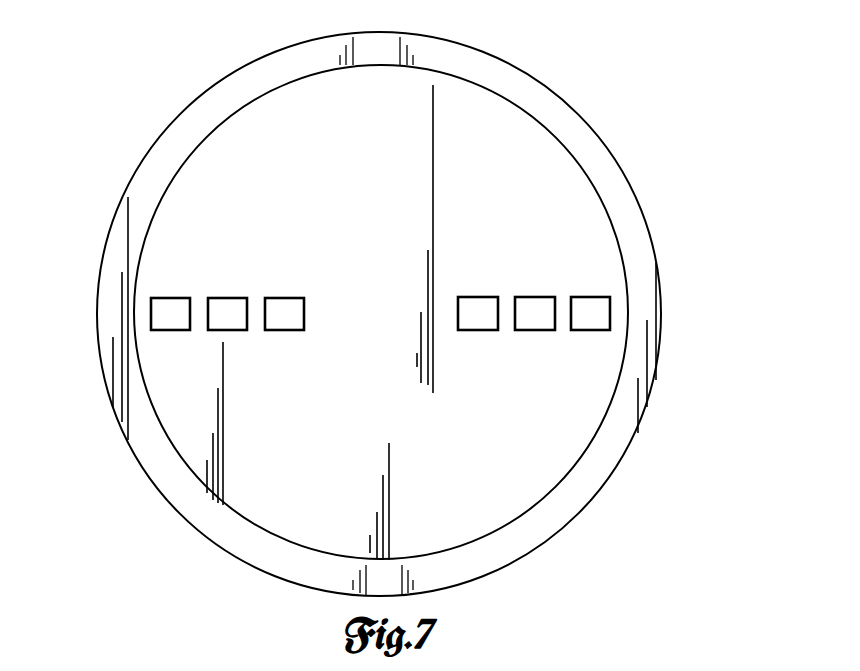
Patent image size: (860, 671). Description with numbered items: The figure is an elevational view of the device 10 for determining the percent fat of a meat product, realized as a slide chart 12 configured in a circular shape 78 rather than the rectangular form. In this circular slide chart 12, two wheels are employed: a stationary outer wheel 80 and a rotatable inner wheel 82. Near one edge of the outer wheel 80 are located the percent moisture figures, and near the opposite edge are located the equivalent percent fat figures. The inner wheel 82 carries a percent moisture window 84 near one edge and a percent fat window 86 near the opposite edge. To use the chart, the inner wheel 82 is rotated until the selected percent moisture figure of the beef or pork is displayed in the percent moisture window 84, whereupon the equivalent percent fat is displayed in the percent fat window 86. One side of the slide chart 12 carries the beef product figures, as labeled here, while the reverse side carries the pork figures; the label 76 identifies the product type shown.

The device for determining percent fat 10 is at (640, 62).
The slide chart 12 is at (622, 168).
The circular shape 78 is at (381, 316).
The stationary outer wheel 80 is at (150, 178).
The rotatable inner wheel 82 is at (193, 447).
The percent moisture window 84 is at (200, 328).
The percent fat window 86 is at (563, 327).
The product type label 76 is at (520, 425).